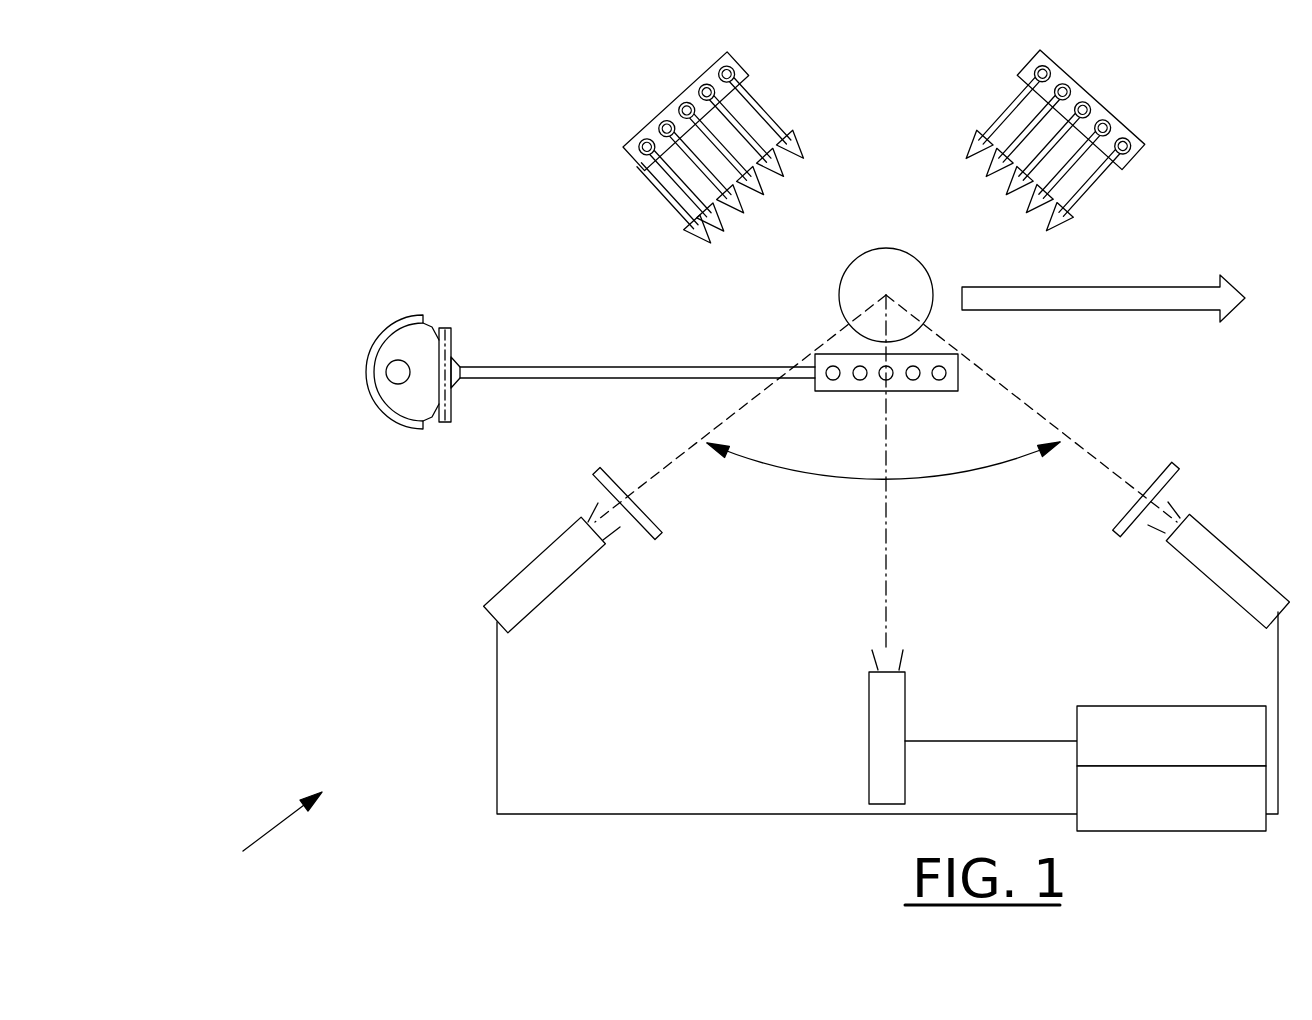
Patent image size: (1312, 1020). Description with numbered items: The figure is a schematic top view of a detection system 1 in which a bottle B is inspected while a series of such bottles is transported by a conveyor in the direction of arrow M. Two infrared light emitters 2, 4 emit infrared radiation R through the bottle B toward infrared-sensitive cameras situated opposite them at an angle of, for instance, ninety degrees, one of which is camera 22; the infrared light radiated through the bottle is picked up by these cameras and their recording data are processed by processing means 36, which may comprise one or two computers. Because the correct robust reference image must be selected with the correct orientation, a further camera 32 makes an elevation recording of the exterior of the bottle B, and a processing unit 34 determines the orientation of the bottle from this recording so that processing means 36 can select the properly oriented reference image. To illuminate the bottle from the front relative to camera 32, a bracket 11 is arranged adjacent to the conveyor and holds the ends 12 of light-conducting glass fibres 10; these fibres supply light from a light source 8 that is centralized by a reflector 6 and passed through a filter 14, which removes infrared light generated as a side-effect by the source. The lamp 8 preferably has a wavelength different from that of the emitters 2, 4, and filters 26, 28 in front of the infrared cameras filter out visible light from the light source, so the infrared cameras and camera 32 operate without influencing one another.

The measuring device 1 is at (268, 835).
The infrared light emitter 2 is at (1142, 145).
The infrared light emitter 4 is at (647, 125).
The reflector 6 is at (375, 348).
The light source 8 is at (398, 372).
The glass fibres 10 is at (600, 372).
The bracket 11 is at (920, 383).
The ends of light-conducting fibres 12 is at (860, 380).
The filter 14 is at (452, 405).
The camera 22 is at (530, 600).
The filter 26 is at (658, 538).
The filter 28 is at (1152, 465).
The camera 32 is at (900, 697).
The processing unit 34 is at (1175, 718).
The processing means 36 is at (1225, 815).
The bottle B is at (788, 297).
The direction of transport M is at (1119, 298).
The infrared radiation R is at (773, 120).